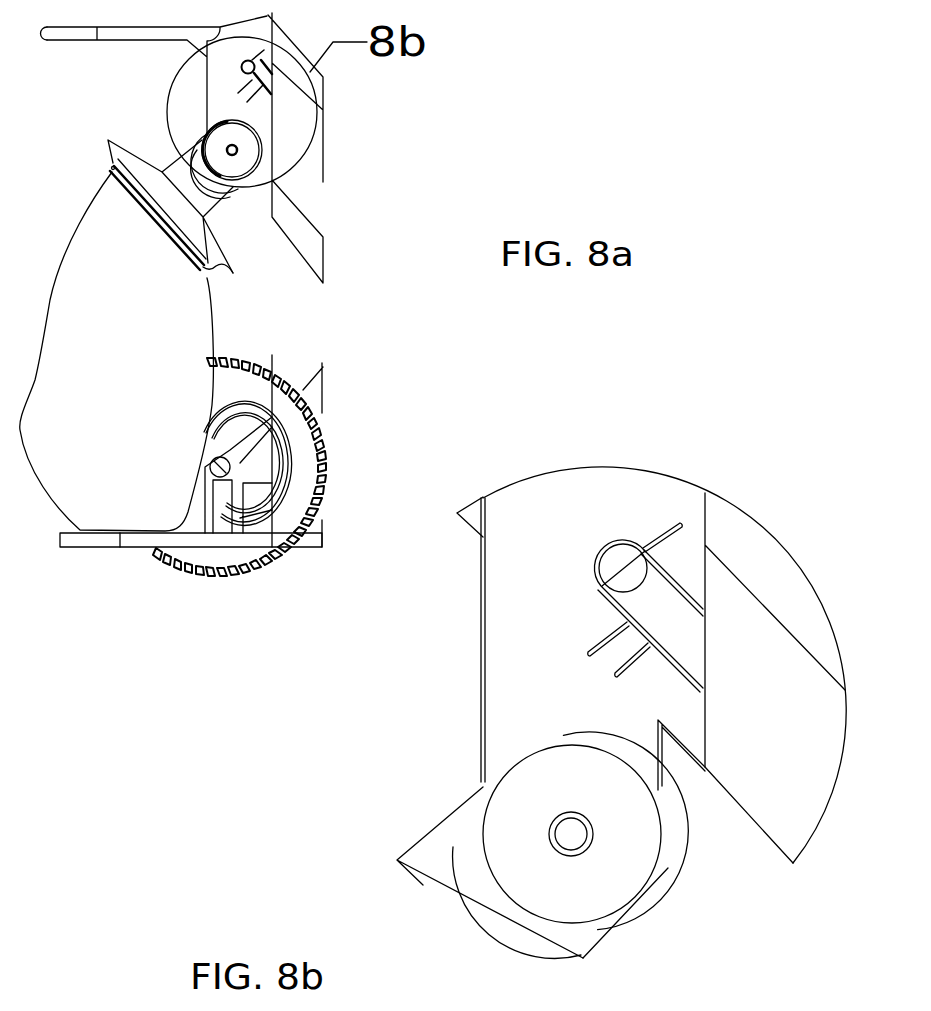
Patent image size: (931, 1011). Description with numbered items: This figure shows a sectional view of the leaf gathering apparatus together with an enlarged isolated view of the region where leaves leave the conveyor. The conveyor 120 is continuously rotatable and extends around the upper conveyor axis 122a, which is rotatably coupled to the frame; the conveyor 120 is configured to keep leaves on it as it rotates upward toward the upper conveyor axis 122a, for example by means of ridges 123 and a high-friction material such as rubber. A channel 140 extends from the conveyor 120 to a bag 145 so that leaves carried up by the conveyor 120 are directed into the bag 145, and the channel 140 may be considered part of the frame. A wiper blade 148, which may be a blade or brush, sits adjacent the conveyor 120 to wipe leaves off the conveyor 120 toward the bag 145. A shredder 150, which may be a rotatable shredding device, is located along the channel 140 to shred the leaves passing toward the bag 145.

In FIG. 8A, the channel 140 is at (222, 107).
In FIG. 8B, the channel 140 is at (513, 697).
In FIG. 8A, the bag 145 is at (78, 262).
In FIG. 8A, the shredder 150 is at (263, 149).
In FIG. 8B, the shredder 150 is at (503, 764).
In FIG. 8B, the wiper blade 148 is at (602, 628).
In FIG. 8B, the upper conveyor axis 122a is at (615, 570).
In FIG. 8B, the ridges 123 is at (662, 536).
In FIG. 8B, the conveyor 120 is at (668, 575).